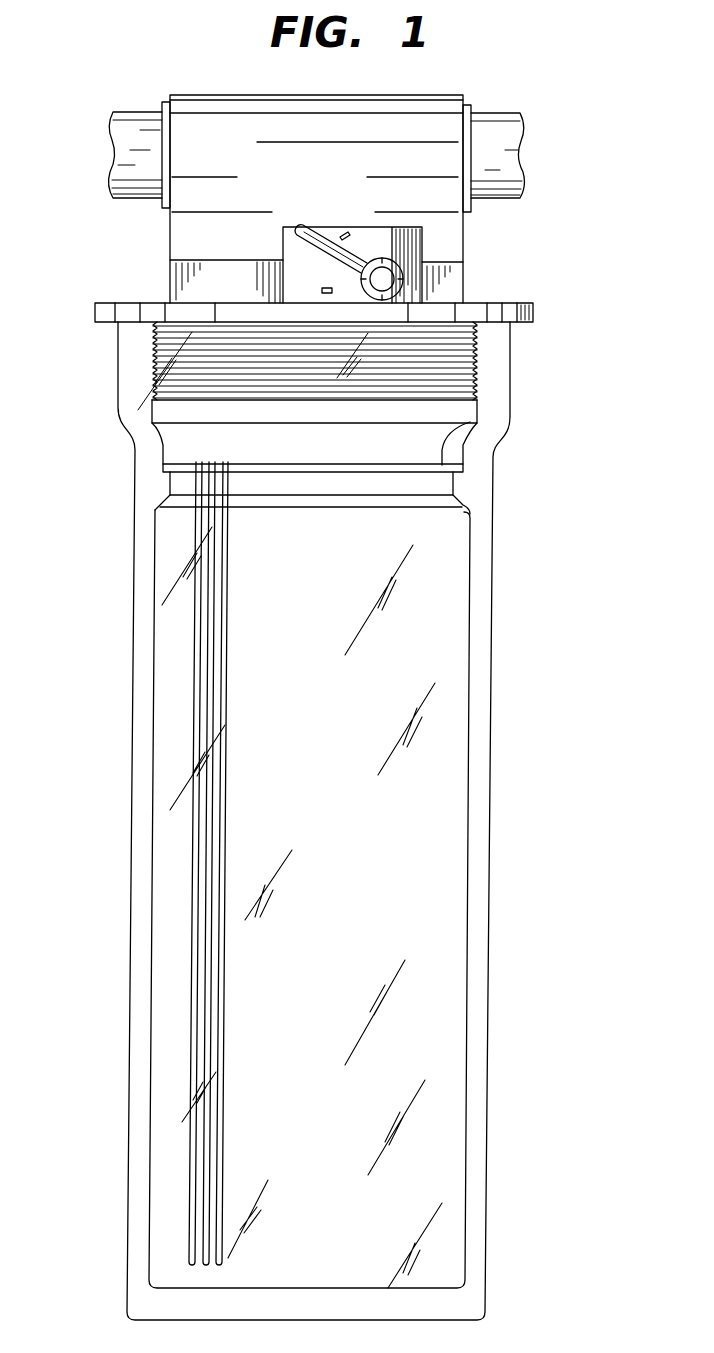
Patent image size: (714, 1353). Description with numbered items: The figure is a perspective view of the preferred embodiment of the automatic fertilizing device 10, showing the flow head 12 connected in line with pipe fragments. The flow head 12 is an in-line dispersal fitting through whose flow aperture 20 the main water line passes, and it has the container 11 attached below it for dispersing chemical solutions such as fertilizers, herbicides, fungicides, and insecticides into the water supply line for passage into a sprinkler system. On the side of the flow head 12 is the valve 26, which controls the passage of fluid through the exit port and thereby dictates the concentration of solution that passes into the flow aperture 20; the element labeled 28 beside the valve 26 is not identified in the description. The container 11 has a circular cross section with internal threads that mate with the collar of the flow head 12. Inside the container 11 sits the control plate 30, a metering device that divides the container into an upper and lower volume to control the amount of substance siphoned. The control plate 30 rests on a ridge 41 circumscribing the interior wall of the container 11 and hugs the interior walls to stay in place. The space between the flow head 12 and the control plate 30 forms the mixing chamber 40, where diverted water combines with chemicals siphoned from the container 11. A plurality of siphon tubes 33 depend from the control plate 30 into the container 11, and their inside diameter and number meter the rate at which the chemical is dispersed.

The automatic fertilizing device 10 is at (516, 65).
The container 11 is at (493, 652).
The flow head 12 is at (463, 96).
The flow aperture 20 is at (533, 155).
The valve 26 is at (400, 270).
The valve handle 28 is at (320, 227).
The control plate 30 is at (470, 422).
The siphon tubes 33 is at (198, 637).
The mixing chamber 40 is at (190, 430).
The ridge 41 is at (458, 503).